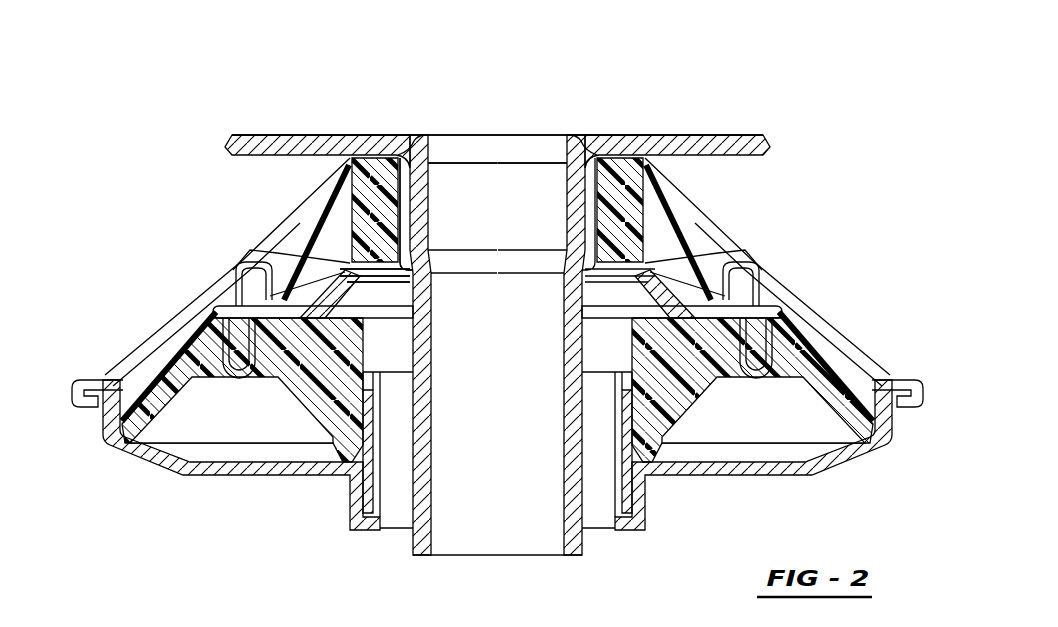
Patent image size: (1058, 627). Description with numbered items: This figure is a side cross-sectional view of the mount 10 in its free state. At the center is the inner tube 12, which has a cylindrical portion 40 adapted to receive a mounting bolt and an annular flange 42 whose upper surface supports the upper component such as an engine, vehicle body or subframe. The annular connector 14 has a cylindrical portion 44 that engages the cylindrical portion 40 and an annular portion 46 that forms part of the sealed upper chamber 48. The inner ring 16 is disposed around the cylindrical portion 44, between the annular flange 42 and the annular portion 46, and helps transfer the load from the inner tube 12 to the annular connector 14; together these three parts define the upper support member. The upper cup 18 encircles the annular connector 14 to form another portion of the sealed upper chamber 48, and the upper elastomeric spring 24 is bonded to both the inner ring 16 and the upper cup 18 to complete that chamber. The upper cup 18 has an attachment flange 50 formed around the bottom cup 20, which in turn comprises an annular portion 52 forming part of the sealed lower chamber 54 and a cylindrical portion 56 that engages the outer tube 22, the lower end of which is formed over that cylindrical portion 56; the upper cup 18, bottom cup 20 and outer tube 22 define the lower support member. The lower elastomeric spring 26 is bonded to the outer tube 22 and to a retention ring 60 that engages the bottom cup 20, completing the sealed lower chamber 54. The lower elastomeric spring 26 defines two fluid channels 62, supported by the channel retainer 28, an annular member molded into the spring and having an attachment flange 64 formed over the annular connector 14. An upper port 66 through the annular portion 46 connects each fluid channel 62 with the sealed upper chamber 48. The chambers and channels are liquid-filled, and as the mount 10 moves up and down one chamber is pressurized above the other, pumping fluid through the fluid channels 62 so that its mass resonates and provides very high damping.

The mount 10 is at (783, 90).
The inner tube 12 is at (425, 557).
The annular connector 14 is at (727, 256).
The inner ring 16 is at (640, 178).
The upper cup 18 is at (840, 345).
The bottom cup 20 is at (831, 468).
The outer tube 22 is at (625, 517).
The upper elastomeric spring 24 is at (665, 223).
The lower elastomeric spring 26 is at (857, 385).
The channel retainer 28 is at (783, 336).
The cylindrical portion 40 is at (432, 352).
The annular flange 42 is at (310, 150).
The cylindrical portion 44 is at (403, 222).
The annular portion 46 is at (327, 228).
The sealed upper chamber 48 is at (300, 255).
The attachment flange 50 is at (73, 378).
The annular portion 52 is at (240, 476).
The sealed lower chamber 54 is at (222, 403).
The cylindrical portion 56 is at (352, 497).
The retention ring 60 is at (872, 425).
The fluid channel 62 is at (752, 338).
The attachment flange 64 is at (212, 307).
The upper port 66 is at (497, 81).